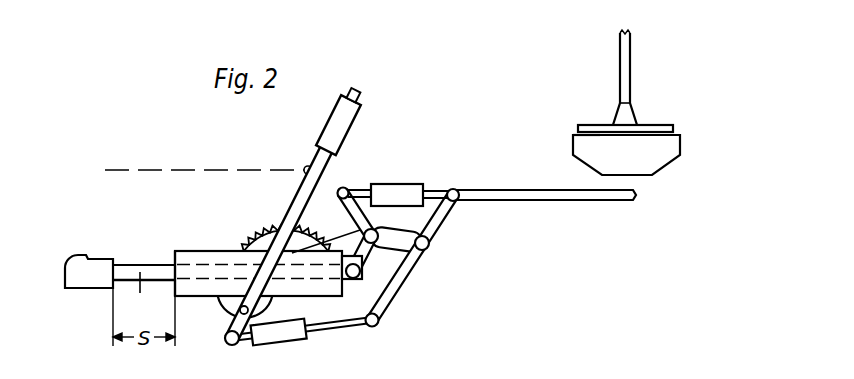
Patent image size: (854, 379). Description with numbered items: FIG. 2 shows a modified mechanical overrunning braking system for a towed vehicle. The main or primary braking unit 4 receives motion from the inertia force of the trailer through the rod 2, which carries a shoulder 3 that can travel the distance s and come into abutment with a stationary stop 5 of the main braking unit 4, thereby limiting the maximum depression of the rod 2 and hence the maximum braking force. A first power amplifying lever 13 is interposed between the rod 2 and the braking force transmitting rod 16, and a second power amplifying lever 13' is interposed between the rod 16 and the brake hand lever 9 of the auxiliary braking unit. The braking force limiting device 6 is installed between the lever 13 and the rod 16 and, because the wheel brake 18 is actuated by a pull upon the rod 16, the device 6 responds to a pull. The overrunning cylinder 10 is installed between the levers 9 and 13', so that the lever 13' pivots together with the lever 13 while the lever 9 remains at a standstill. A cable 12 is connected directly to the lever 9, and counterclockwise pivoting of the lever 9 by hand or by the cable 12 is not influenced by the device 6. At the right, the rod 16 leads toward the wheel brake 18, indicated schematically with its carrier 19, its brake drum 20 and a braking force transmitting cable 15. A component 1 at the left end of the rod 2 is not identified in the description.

The stop block 1 is at (81, 257).
The rod 2 is at (139, 297).
The shoulder 3 is at (117, 268).
The main braking unit 4 is at (226, 251).
The stationary stop 5 is at (177, 252).
The braking force limiting device 6 is at (385, 183).
The brake hand lever 9 is at (335, 128).
The overrunning cylinder 10 is at (292, 336).
The cable 12 is at (138, 168).
The first power amplifying lever 13 is at (358, 185).
The second power amplifying lever 13' is at (408, 281).
The braking force transmitting cable 15 is at (628, 42).
The braking force transmitting rod 16 is at (519, 200).
The wheel brake 18 is at (573, 134).
The carrier 19 is at (653, 127).
The brake drum 20 is at (614, 163).